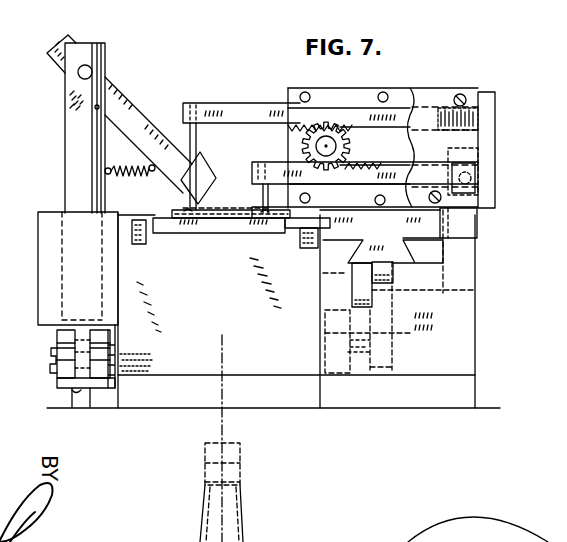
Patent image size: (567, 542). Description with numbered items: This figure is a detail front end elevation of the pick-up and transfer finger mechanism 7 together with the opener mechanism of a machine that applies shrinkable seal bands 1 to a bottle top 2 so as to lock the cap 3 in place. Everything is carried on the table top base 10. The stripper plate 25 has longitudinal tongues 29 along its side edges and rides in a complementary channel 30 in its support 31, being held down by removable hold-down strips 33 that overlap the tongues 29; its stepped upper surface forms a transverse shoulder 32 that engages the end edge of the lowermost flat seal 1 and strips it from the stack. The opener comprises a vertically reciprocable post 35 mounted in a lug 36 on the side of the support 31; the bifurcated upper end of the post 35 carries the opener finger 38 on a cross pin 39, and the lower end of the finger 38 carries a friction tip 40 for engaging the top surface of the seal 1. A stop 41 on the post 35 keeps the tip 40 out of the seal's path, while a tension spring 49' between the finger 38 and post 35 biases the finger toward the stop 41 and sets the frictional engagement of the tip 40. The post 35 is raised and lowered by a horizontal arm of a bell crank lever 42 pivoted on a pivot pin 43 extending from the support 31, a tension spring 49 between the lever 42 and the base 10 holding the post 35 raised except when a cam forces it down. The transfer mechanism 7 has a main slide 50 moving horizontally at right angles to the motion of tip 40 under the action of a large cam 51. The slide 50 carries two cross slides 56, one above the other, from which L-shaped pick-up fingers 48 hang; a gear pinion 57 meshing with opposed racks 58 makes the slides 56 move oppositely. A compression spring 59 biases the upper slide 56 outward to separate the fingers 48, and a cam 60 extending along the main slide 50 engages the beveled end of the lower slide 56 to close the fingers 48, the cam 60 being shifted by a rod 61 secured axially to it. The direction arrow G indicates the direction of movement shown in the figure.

The seal band 1 is at (210, 229).
The bottle top 2 is at (244, 500).
The cap 3 is at (243, 455).
The pick-up and transfer mechanism 7 is at (437, 228).
The table top base 10 is at (485, 409).
The plate 25 is at (237, 231).
The longitudinal tongues 29 is at (163, 233).
The channel 30 is at (277, 234).
The support 31 is at (229, 319).
The transverse shoulder 32 is at (319, 201).
The hold-down strips 33 is at (118, 219).
The post 35 is at (65, 146).
The lug 36 is at (37, 266).
The opener finger 38 is at (150, 121).
The cross pin 39 is at (92, 69).
The friction tip 40 is at (216, 206).
The stop 41 is at (95, 107).
The bell crank lever 42 is at (57, 384).
The pivot pin 43 is at (45, 357).
The pick-up and transfer fingers 48 is at (179, 213).
The tension spring 49 is at (50, 411).
The tension spring 49' is at (130, 185).
The main slide 50 is at (403, 226).
The cam 51 is at (540, 522).
The cross slides 56 is at (258, 124).
The gear pinion 57 is at (302, 142).
The racks 58 is at (350, 164).
The compression spring 59 is at (481, 118).
The cam 60 is at (466, 169).
The rod 61 is at (482, 178).
The direction arrow G is at (133, 83).